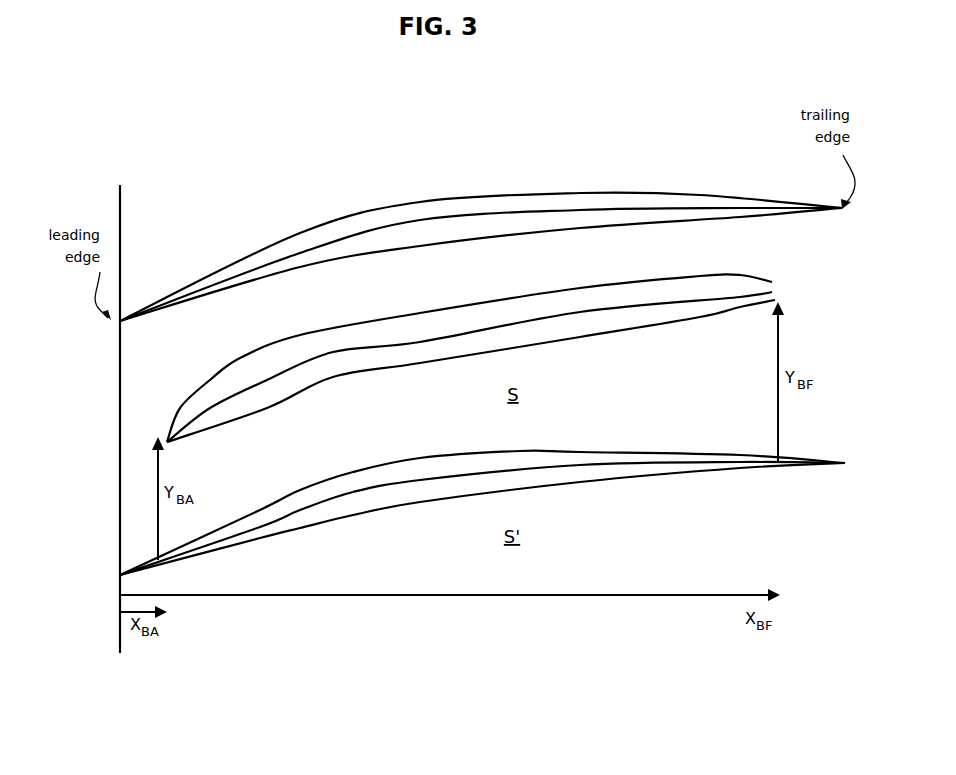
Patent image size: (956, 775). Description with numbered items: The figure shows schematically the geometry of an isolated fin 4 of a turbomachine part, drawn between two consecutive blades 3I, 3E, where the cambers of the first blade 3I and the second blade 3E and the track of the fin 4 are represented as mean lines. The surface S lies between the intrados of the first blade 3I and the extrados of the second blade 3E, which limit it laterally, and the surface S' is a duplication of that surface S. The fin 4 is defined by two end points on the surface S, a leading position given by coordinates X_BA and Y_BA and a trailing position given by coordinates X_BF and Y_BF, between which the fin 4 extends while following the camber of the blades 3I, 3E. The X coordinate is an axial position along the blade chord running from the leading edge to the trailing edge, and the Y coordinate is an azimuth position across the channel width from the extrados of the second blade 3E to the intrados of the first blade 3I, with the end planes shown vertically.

The first blade 3I is at (427, 192).
The fin 4 is at (396, 307).
The second blade 3E is at (408, 447).